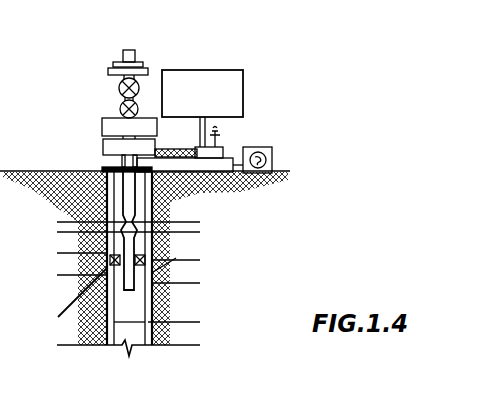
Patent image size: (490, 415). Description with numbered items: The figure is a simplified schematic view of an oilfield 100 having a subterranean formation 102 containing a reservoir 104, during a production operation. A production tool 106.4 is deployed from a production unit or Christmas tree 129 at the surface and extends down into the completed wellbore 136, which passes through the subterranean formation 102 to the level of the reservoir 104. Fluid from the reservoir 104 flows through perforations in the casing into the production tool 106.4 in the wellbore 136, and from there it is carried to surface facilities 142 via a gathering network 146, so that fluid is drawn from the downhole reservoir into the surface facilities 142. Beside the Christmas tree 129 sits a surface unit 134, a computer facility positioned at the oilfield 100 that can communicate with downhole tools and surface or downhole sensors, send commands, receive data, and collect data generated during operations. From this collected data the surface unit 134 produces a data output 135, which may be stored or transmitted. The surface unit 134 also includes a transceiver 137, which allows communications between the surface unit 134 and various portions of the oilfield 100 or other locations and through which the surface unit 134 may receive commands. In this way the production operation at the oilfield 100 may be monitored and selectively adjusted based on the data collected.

The oilfield 100 is at (103, 86).
The subterranean formation 102 is at (183, 253).
The reservoir 104 is at (205, 313).
The production tool 106.4 is at (80, 291).
The Christmas tree 129 is at (128, 50).
The surface unit 134 is at (197, 146).
The data output 135 is at (224, 70).
The wellbore 136 is at (147, 197).
The transceiver 137 is at (223, 137).
The surface facilities 142 is at (273, 155).
The gathering network 146 is at (235, 193).